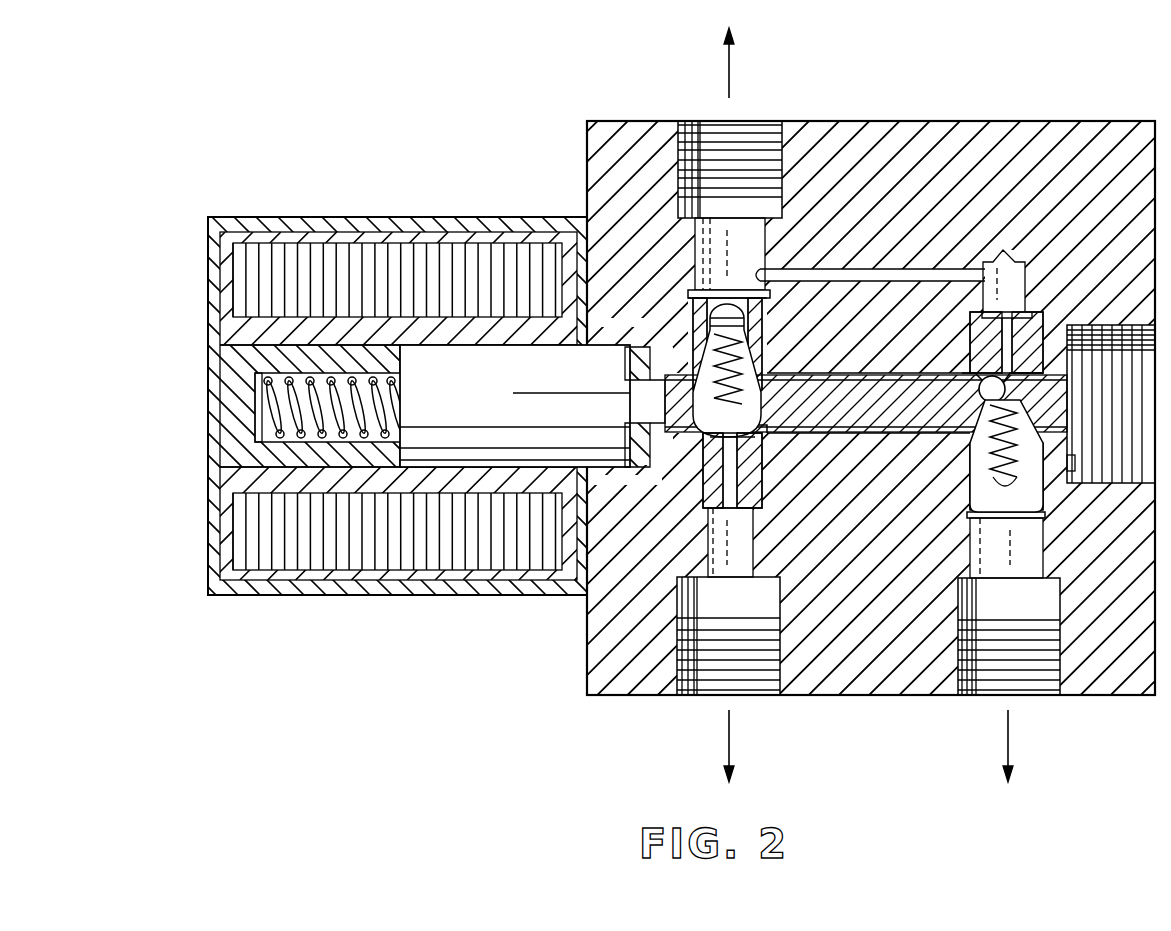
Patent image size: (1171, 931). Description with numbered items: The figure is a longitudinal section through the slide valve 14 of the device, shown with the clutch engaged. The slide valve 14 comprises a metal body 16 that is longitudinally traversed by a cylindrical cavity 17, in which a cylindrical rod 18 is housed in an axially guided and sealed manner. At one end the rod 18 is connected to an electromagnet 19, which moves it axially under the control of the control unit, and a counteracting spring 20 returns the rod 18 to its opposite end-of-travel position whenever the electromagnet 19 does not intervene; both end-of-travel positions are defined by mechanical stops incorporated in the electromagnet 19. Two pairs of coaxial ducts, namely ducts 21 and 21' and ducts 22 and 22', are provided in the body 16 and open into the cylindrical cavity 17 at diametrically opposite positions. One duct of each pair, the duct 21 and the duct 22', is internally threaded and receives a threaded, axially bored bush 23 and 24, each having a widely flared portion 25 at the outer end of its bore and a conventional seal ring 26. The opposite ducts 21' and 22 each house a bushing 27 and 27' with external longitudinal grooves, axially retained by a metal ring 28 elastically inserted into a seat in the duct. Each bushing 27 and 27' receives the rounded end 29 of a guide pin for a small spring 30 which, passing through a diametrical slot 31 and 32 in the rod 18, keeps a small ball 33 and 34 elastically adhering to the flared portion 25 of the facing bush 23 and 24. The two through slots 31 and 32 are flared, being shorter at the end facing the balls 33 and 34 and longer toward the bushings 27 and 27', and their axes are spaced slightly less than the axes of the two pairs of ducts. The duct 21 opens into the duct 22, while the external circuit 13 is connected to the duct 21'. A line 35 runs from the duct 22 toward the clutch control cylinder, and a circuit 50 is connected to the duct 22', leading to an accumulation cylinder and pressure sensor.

The external circuit 13 is at (1010, 740).
The slide valve 14 is at (1063, 122).
The metal body 16 is at (640, 668).
The cylindrical cavity 17 is at (808, 455).
The cylindrical rod 18 is at (864, 372).
The electromagnet 19 is at (393, 543).
The counteracting spring 20 is at (268, 362).
The duct 21 is at (1020, 254).
The duct 21' is at (1046, 606).
The duct 22 is at (730, 205).
The duct 22' is at (757, 613).
The threaded bush 23 is at (1030, 345).
The threaded bush 24 is at (706, 495).
The flared portion 25 is at (1035, 345).
The seal ring 26 is at (975, 380).
The bushing 27 is at (866, 404).
The bushing 27' is at (1093, 461).
The metal ring 28 is at (745, 270).
The rounded end of guide pin 29 is at (720, 330).
The small spring 30 is at (746, 358).
The diametrical slot 31 is at (1045, 387).
The diametrical slot 32 is at (712, 318).
The small ball 33 is at (979, 392).
The small ball 34 is at (766, 430).
The line 35 is at (729, 70).
The circuit 50 is at (731, 742).